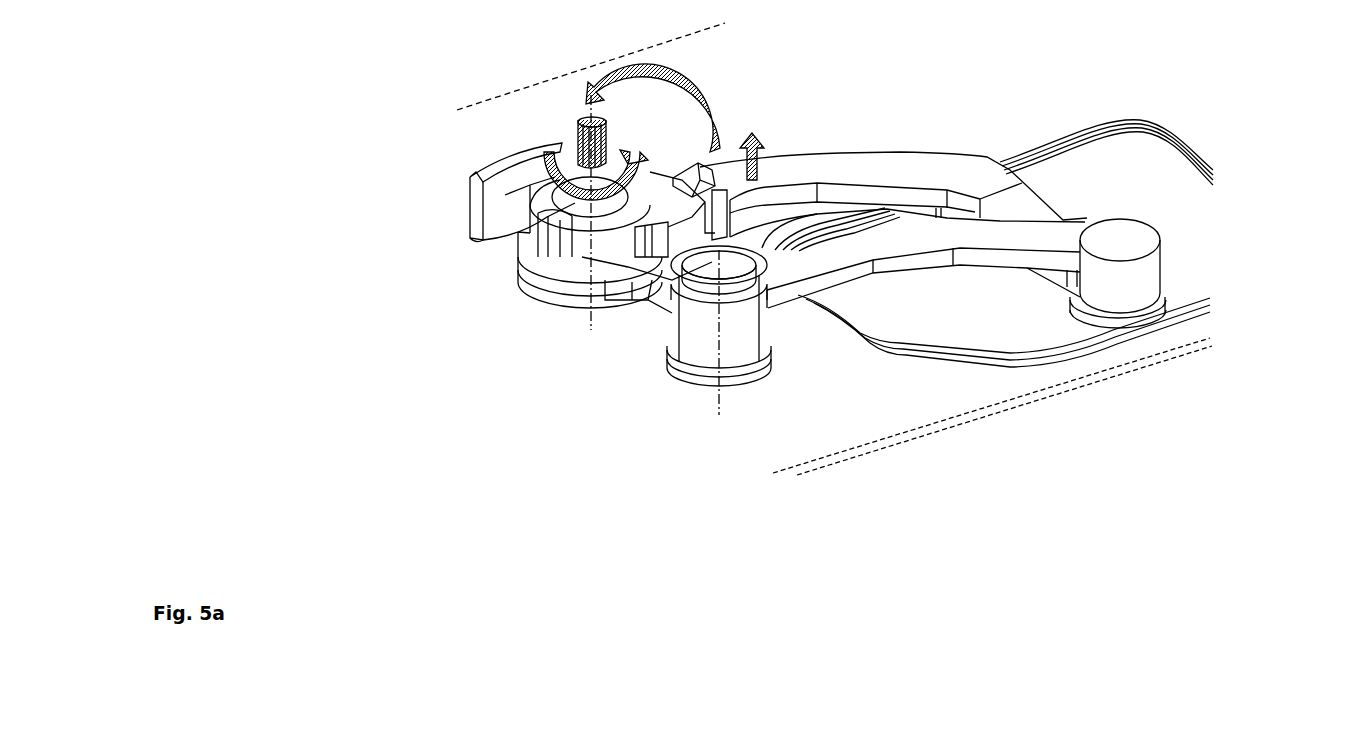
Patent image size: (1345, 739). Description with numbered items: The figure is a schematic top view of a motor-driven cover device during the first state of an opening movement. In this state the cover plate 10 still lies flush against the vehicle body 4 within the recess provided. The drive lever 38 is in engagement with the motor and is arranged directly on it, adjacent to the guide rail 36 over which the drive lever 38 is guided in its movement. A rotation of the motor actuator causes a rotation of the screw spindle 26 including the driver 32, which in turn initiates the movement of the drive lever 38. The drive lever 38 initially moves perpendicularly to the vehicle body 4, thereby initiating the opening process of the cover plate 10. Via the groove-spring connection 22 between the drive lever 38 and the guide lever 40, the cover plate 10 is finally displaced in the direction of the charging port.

The vehicle body 4 is at (960, 380).
The cover plate 10 is at (897, 303).
The groove-spring connection 22 is at (1200, 248).
The screw spindle 26 is at (570, 160).
The driver 32 is at (647, 220).
The guide rail 36 is at (510, 197).
The drive lever 38 is at (838, 172).
The guide lever 40 is at (1108, 237).